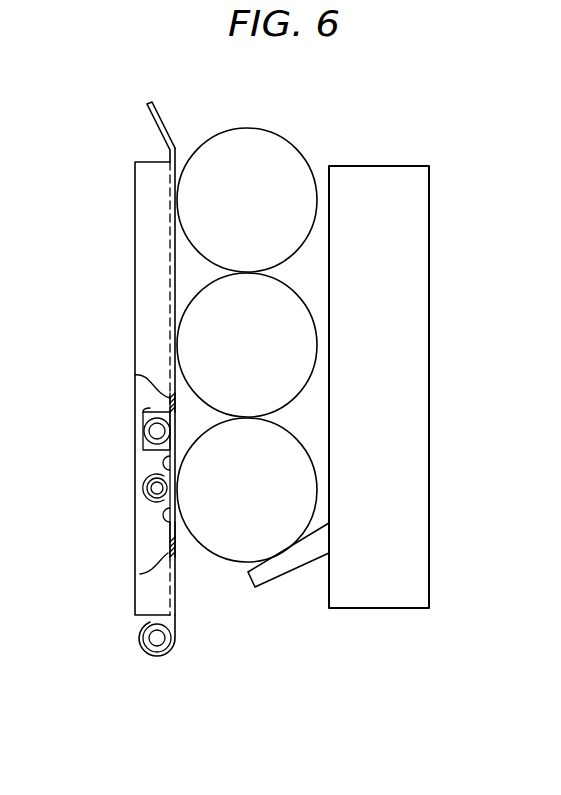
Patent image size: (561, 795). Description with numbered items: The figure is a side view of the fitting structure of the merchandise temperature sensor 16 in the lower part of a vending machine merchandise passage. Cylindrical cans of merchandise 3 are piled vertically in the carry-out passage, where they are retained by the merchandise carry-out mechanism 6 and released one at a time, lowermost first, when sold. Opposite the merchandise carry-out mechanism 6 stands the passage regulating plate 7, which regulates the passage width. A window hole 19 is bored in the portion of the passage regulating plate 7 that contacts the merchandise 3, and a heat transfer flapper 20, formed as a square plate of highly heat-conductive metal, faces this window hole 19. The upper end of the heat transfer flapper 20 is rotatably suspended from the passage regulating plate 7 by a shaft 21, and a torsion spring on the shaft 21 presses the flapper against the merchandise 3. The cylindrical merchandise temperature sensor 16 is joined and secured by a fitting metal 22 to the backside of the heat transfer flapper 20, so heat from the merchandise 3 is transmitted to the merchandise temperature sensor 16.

The merchandise 3 is at (228, 550).
The merchandise carry-out mechanism 6 is at (422, 592).
The passage regulating plate 7 is at (145, 287).
The merchandise temperature sensor 16 is at (151, 470).
The window hole 19 is at (167, 538).
The heat transfer flapper 20 is at (167, 522).
The shaft 21 is at (150, 408).
The fitting metal 22 is at (147, 488).